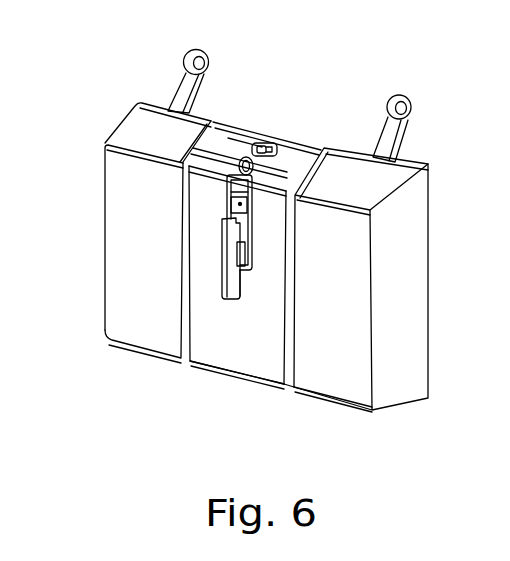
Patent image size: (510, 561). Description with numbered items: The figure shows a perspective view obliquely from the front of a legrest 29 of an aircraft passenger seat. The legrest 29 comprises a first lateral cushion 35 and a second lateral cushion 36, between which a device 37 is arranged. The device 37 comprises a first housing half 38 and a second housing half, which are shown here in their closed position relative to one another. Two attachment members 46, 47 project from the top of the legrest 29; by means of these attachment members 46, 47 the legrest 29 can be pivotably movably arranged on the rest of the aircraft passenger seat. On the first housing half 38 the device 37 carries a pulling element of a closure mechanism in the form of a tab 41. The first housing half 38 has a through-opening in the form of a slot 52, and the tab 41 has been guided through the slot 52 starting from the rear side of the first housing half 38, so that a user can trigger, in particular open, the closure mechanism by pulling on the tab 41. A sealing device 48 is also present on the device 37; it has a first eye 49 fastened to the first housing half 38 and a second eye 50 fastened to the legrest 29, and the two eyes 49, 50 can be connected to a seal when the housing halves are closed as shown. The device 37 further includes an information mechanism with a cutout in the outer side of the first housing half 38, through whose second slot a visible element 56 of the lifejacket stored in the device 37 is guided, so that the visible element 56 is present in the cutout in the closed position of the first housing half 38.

The legrest 29 is at (235, 297).
The first lateral cushion 35 is at (335, 352).
The second lateral cushion 36 is at (132, 302).
The device 37 is at (279, 401).
The first housing half 38 is at (217, 343).
The tab 41 is at (223, 257).
The attachment member 46 is at (407, 137).
The attachment member 47 is at (203, 82).
The sealing device 48 is at (240, 139).
The first eye 49 is at (262, 172).
The second eye 50 is at (268, 142).
The slot 52 is at (224, 181).
The visible element 56 is at (247, 268).